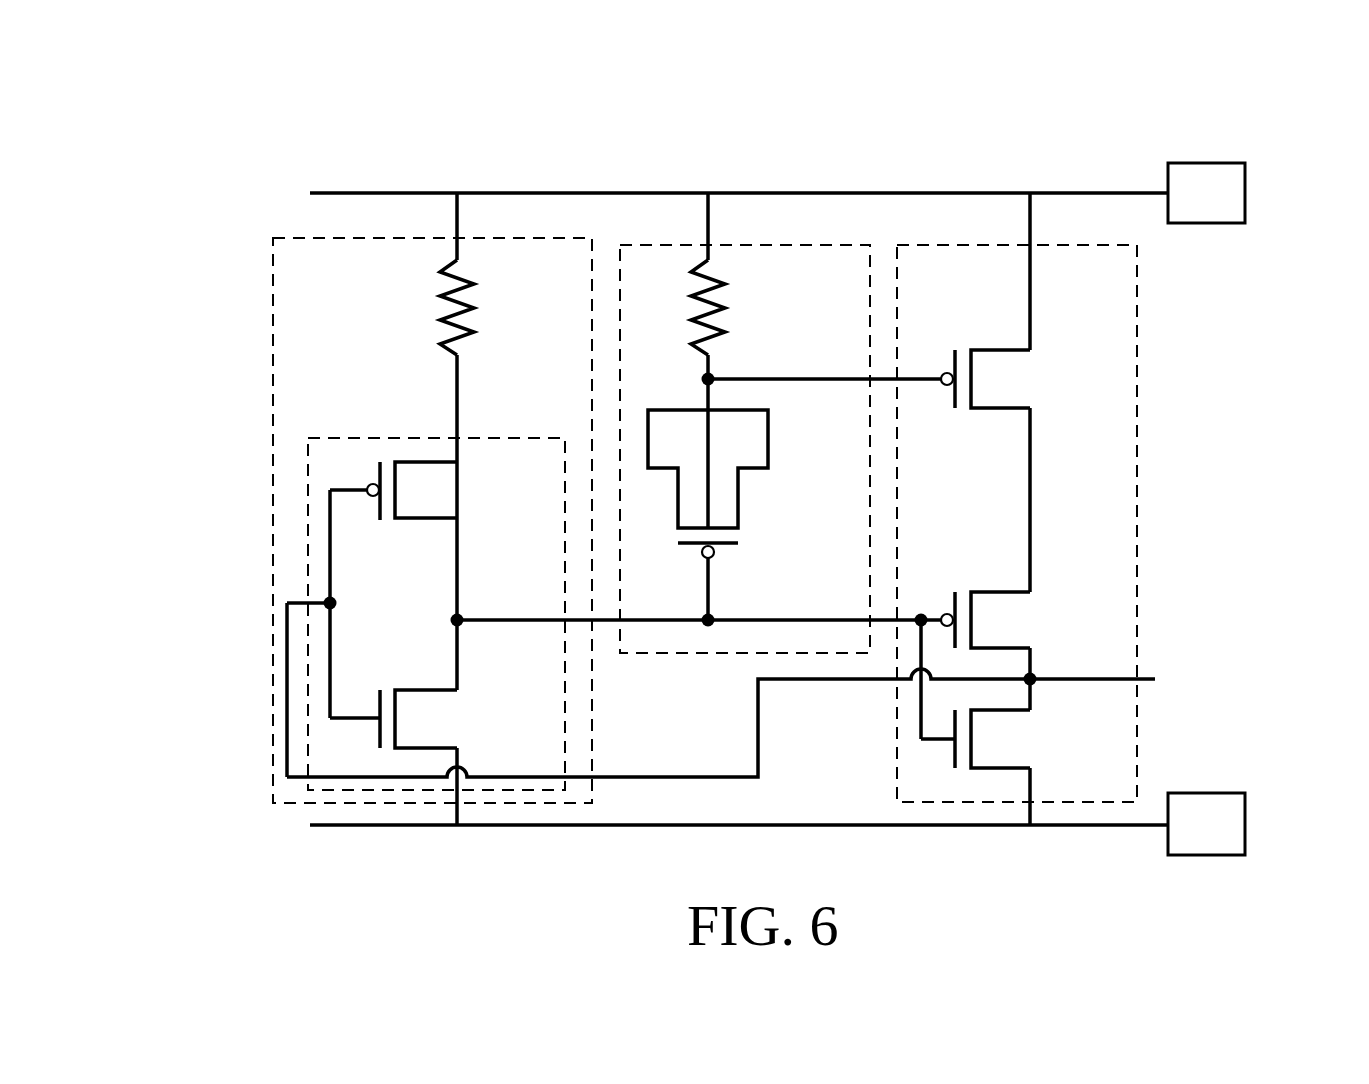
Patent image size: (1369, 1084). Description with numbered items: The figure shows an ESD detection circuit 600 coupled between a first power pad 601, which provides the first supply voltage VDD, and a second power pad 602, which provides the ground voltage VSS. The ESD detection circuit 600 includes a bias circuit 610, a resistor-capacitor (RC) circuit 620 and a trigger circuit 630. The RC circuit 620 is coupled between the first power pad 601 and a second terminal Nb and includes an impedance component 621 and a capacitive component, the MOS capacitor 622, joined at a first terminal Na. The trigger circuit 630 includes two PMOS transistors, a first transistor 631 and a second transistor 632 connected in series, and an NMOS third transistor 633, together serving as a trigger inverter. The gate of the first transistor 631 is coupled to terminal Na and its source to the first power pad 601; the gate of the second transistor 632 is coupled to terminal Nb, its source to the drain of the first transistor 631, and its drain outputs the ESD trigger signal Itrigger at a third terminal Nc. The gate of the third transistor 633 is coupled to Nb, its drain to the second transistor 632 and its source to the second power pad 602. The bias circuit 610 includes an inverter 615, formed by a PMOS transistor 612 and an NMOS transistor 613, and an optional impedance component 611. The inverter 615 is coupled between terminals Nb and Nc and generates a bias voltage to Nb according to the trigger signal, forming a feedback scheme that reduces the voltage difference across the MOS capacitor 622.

The ESD detection circuit 600 is at (288, 118).
The first power pad 601 is at (1245, 193).
The second power pad 602 is at (1245, 825).
The bias circuit 610 is at (297, 238).
The impedance component 611 is at (475, 296).
The PMOS transistor 612 is at (443, 497).
The NMOS transistor 613 is at (443, 725).
The inverter 615 is at (373, 438).
The resistor-capacitor (RC) circuit 620 is at (818, 245).
The impedance component 621 is at (733, 295).
The MOS capacitor 622 is at (743, 497).
The trigger circuit 630 is at (1137, 312).
The first transistor 631 is at (1017, 385).
The second transistor 632 is at (1017, 628).
The third transistor 633 is at (1017, 745).